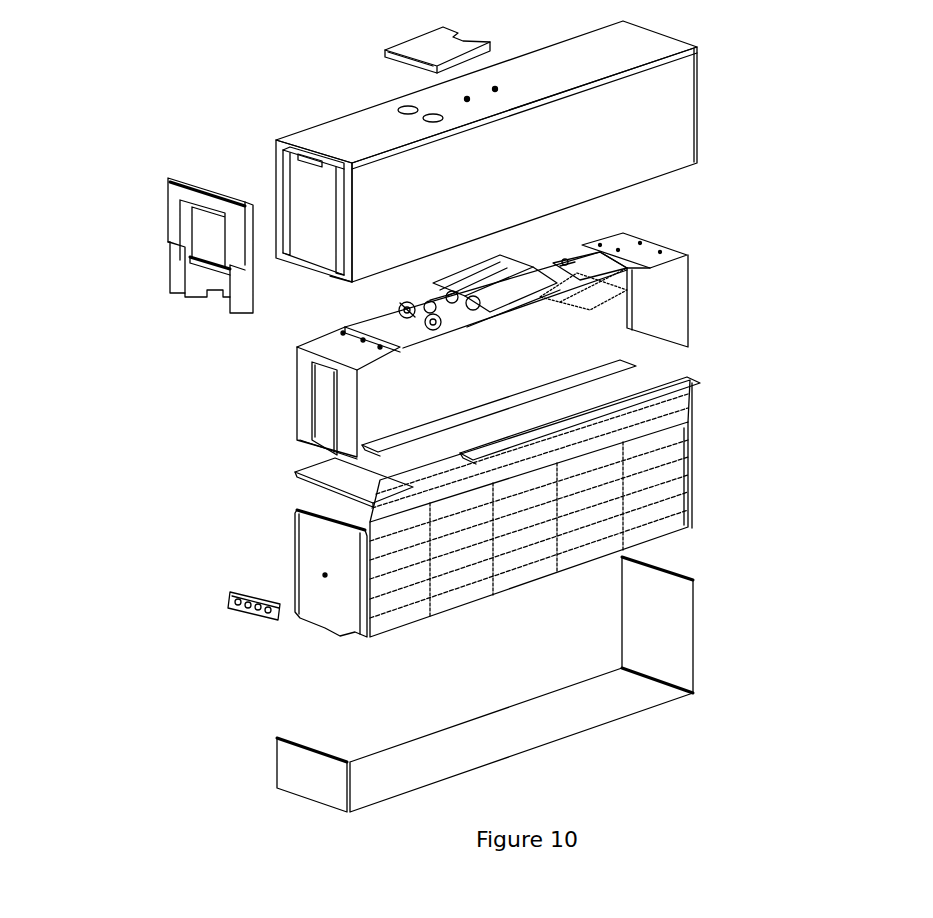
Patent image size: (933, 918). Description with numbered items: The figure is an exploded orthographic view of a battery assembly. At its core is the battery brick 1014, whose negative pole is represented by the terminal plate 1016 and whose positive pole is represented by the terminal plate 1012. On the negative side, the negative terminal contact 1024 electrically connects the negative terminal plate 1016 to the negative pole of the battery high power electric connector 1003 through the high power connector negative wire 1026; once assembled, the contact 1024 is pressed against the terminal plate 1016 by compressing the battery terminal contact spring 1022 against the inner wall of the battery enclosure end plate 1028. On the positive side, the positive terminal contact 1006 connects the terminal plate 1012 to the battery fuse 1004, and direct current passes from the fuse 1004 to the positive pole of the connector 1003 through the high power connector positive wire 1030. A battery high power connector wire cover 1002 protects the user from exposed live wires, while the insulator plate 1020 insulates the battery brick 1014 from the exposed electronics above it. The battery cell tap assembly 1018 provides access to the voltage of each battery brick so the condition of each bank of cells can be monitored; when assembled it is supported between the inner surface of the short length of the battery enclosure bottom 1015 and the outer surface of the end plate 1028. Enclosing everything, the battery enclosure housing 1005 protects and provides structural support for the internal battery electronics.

The battery high power connector wire cover 1002 is at (437, 43).
The battery high power electric connector 1003 is at (627, 272).
The battery fuse 1004 is at (627, 268).
The battery enclosure housing 1005 is at (635, 127).
The positive terminal contact 1006 is at (670, 253).
The terminal plate 1012 is at (692, 513).
The battery brick 1014 is at (660, 543).
The battery enclosure bottom 1015 is at (507, 735).
The terminal plate 1016 is at (330, 608).
The battery cell tap assembly 1018 is at (228, 612).
The insulator plate 1020 is at (300, 480).
The battery terminal contact spring 1022 is at (323, 407).
The negative terminal contact 1024 is at (297, 350).
The high power connector negative wire 1026 is at (405, 302).
The battery enclosure end plate 1028 is at (213, 240).
The high power connector positive wire 1030 is at (455, 300).